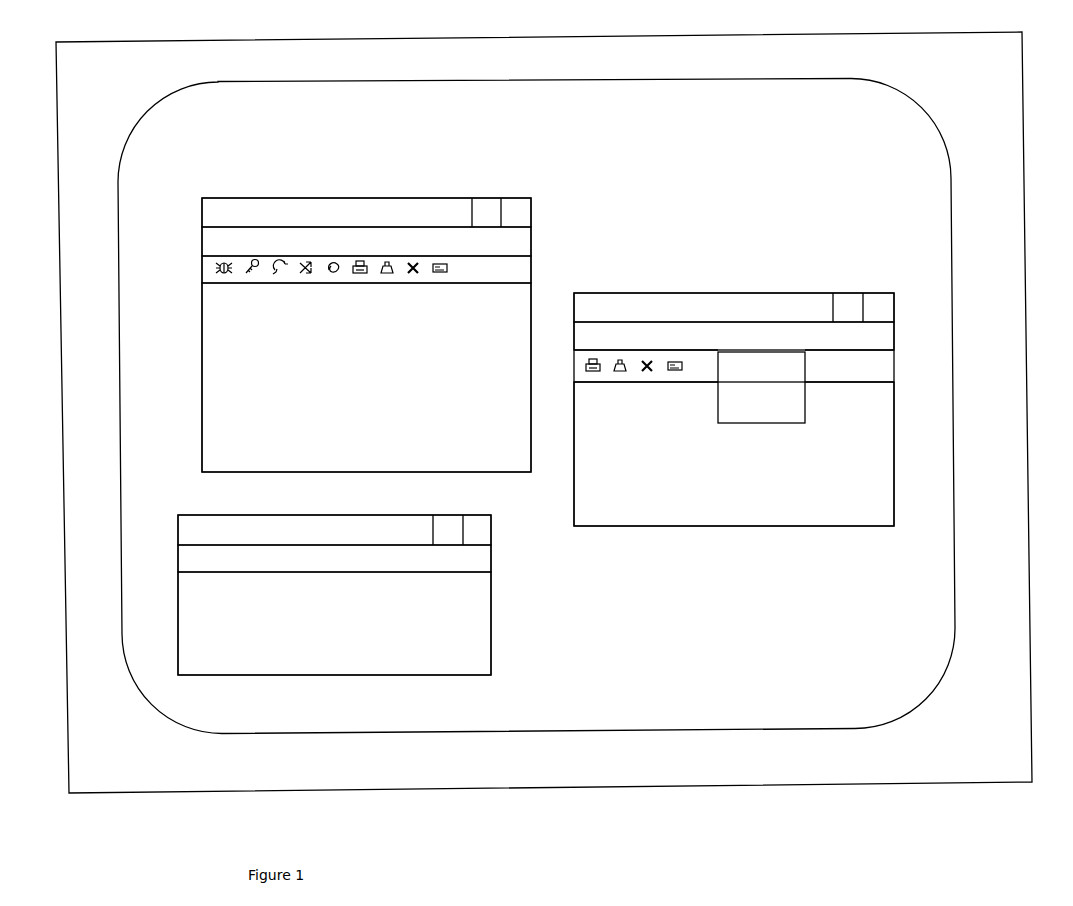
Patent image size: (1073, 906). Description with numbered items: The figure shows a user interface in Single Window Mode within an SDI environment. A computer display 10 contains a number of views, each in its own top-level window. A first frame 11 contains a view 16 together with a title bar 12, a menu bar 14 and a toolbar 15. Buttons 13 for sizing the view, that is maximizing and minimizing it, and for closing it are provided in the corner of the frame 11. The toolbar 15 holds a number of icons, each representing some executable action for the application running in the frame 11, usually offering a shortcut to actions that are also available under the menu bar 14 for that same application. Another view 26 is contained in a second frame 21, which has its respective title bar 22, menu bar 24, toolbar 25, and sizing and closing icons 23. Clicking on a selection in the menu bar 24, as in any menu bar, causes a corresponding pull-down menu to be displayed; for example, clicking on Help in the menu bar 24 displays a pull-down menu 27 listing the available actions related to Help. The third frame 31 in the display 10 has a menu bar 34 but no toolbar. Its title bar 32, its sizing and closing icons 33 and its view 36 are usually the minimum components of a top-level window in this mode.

The computer display 10 is at (58, 217).
The frame 11 is at (203, 387).
The title bar 12 is at (215, 217).
The buttons 13 is at (513, 212).
The menu bar 14 is at (513, 241).
The toolbar 15 is at (513, 266).
The view 16 is at (248, 458).
The frame 21 is at (635, 527).
The title bar 22 is at (619, 305).
The sizing and closing icons 23 is at (876, 305).
The menu bar 24 is at (574, 339).
The toolbar 25 is at (704, 366).
The view 26 is at (750, 497).
The pull-down menu 27 is at (776, 395).
The frame 31 is at (495, 627).
The title bar 32 is at (278, 530).
The sizing and closing icons 33 is at (476, 530).
The menu bar 34 is at (320, 557).
The view 36 is at (478, 658).